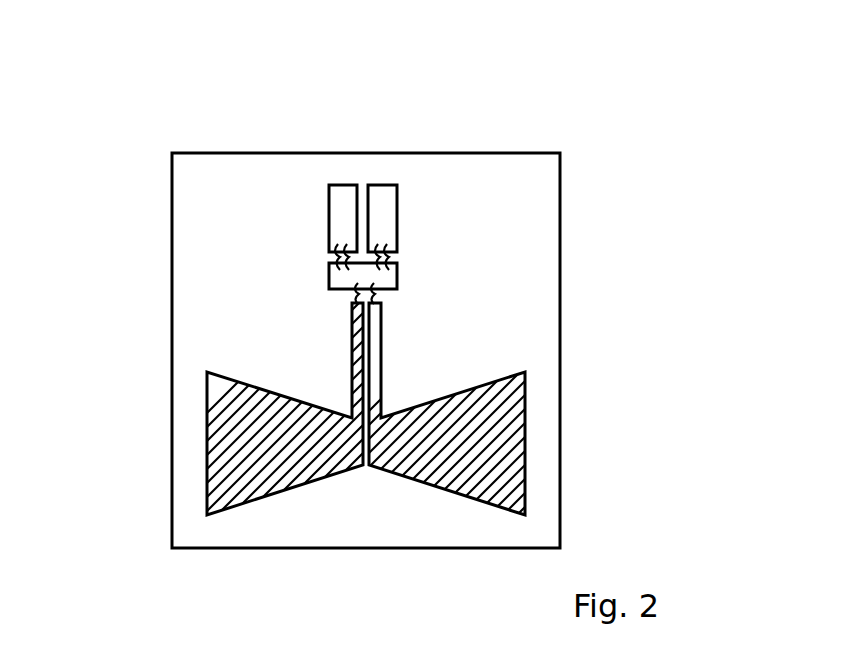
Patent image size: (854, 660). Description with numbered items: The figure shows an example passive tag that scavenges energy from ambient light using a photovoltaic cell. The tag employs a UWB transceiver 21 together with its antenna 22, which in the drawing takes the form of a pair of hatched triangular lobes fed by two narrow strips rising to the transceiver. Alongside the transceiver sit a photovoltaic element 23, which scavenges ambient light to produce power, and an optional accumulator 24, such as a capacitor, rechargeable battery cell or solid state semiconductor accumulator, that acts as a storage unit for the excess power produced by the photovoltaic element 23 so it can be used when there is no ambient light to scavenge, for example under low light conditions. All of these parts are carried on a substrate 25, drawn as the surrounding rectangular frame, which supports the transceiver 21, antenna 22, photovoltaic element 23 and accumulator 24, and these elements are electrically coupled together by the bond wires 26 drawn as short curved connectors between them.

The UWB transceiver 21 is at (326, 280).
The antenna 22 is at (529, 440).
The photovoltaic element 23 is at (399, 212).
The accumulator 24 is at (342, 181).
The substrate 25 is at (562, 310).
The bond wires 26 is at (326, 256).